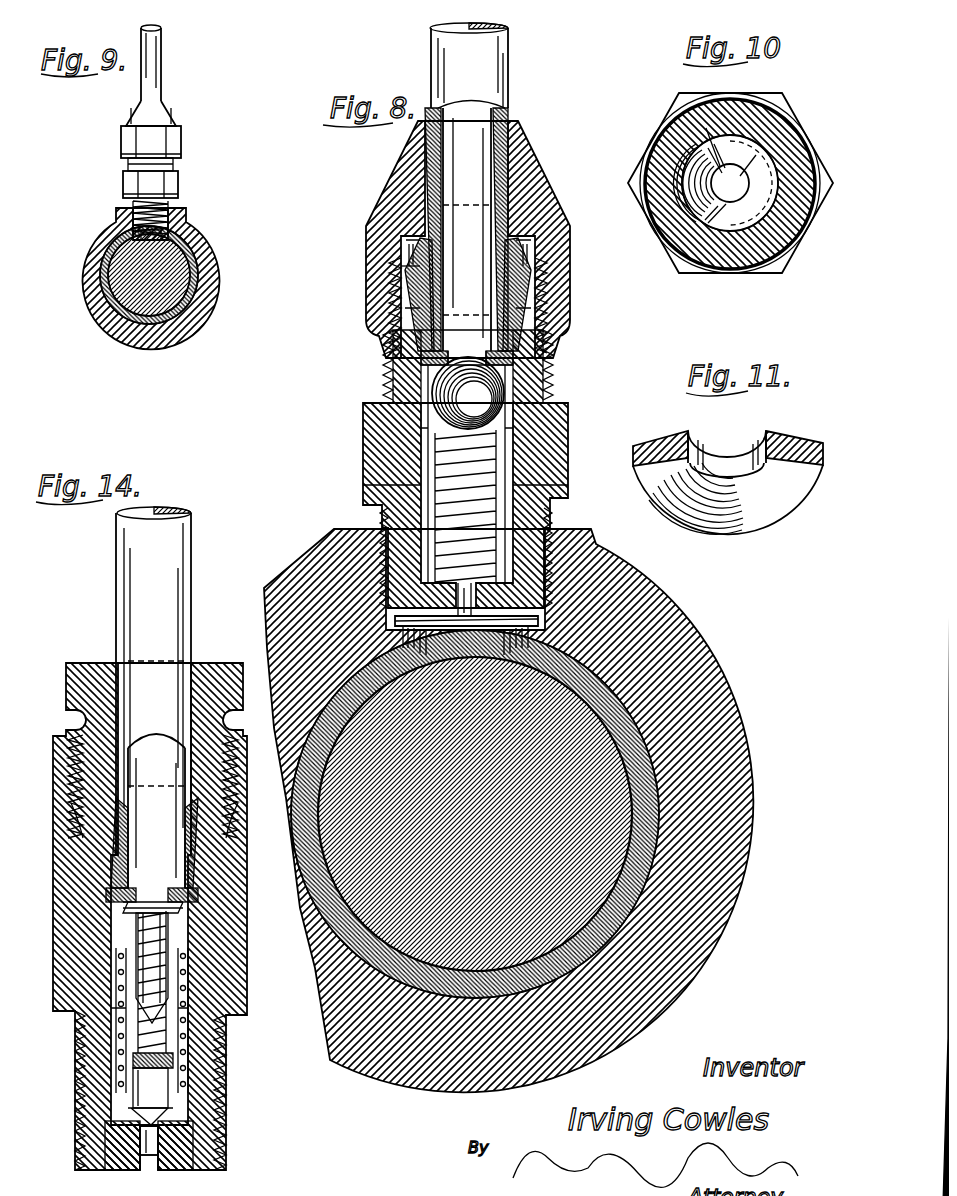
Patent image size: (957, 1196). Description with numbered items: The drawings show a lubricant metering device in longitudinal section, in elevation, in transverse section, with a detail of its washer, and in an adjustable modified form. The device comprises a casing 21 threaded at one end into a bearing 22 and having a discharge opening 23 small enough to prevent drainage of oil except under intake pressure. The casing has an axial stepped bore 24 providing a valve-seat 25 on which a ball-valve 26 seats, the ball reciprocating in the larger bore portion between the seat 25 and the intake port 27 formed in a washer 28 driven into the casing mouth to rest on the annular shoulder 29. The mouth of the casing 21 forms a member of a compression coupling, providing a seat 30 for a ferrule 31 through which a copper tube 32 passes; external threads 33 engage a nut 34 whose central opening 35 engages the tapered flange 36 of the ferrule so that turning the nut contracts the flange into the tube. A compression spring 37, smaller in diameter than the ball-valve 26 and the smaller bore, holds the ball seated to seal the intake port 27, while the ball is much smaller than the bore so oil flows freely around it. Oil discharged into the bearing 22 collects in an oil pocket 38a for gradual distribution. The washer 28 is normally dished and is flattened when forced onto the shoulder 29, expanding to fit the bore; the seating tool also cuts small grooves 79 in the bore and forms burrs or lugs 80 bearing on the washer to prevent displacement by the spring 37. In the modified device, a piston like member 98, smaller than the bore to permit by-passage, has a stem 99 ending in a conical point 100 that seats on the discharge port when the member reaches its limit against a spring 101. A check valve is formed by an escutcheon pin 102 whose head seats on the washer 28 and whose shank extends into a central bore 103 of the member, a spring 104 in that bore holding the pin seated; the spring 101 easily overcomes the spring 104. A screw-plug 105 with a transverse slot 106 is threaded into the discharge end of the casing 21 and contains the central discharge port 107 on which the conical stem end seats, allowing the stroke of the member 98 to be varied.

In FIG. 9, the casing 21 is at (109, 182).
In FIG. 8, the casing 21 is at (355, 437).
In FIG. 10, the casing 21 is at (780, 262).
In FIG. 14, the casing 21 is at (52, 1014).
In FIG. 9, the bearing 22 is at (95, 233).
In FIG. 8, the bearing 22 is at (727, 665).
In FIG. 8, the discharge opening 23 is at (460, 596).
In FIG. 8, the axial stepped bore 24 is at (414, 418).
In FIG. 10, the axial stepped bore 24 is at (742, 258).
In FIG. 8, the valve-seat 25 is at (430, 470).
In FIG. 8, the ball-valve 26 is at (424, 386).
In FIG. 8, the intake port 27 is at (520, 296).
In FIG. 10, the intake port 27 is at (728, 163).
In FIG. 11, the intake port 27 is at (712, 458).
In FIG. 8, the washer 28 is at (540, 352).
In FIG. 10, the washer 28 is at (754, 160).
In FIG. 11, the washer 28 is at (785, 489).
In FIG. 14, the washer 28 is at (190, 887).
In FIG. 8, the annular shoulder 29 is at (540, 375).
In FIG. 8, the seat 30 is at (412, 298).
In FIG. 8, the ferrule 31 is at (398, 256).
In FIG. 9, the copper tube 32 is at (134, 75).
In FIG. 8, the copper tube 32 is at (423, 74).
In FIG. 14, the copper tube 32 is at (109, 605).
In FIG. 9, the external threads 33 is at (120, 156).
In FIG. 8, the external threads 33 is at (380, 368).
In FIG. 9, the nut 34 is at (108, 131).
In FIG. 8, the nut 34 is at (362, 193).
In FIG. 8, the central opening 35 is at (418, 158).
In FIG. 8, the tapered flange 36 is at (525, 238).
In FIG. 8, the compression spring 37 is at (470, 507).
In FIG. 9, the oil pocket 38a is at (162, 228).
In FIG. 8, the oil pocket 38a is at (380, 628).
In FIG. 10, the grooves 79 is at (711, 183).
In FIG. 10, the burrs or lugs 80 is at (700, 136).
In FIG. 14, the piston like member 98 is at (170, 1030).
In FIG. 14, the stem 99 is at (170, 1076).
In FIG. 14, the conical point 100 is at (165, 1108).
In FIG. 14, the spring 101 is at (178, 1005).
In FIG. 14, the escutcheon pin 102 is at (180, 925).
In FIG. 14, the central bore 103 is at (175, 963).
In FIG. 14, the spring 104 is at (165, 975).
In FIG. 14, the screw-plug 105 is at (115, 1165).
In FIG. 14, the transverse slot 106 is at (140, 1165).
In FIG. 14, the central discharge port 107 is at (150, 1140).